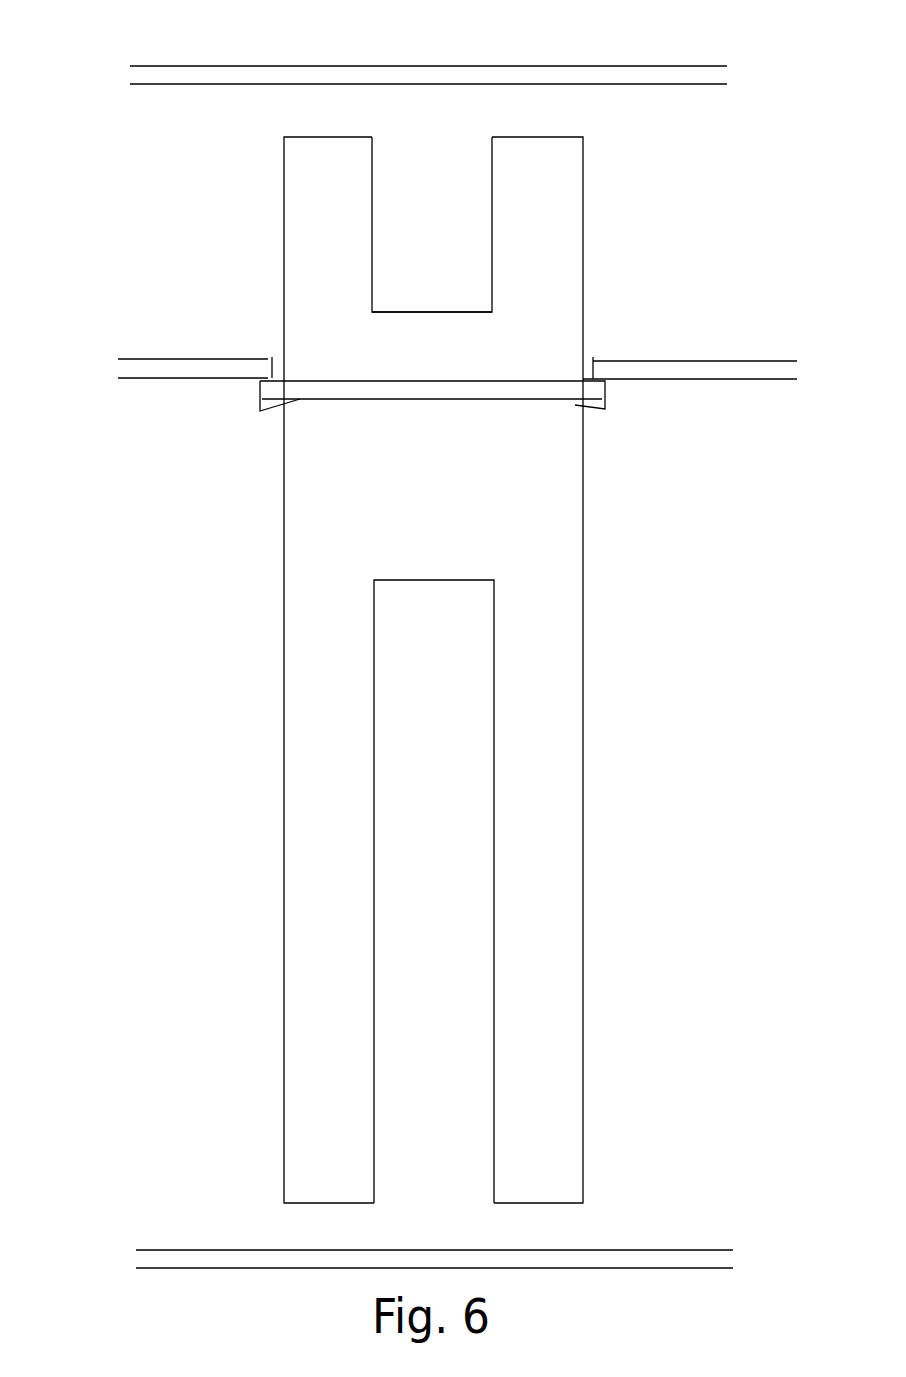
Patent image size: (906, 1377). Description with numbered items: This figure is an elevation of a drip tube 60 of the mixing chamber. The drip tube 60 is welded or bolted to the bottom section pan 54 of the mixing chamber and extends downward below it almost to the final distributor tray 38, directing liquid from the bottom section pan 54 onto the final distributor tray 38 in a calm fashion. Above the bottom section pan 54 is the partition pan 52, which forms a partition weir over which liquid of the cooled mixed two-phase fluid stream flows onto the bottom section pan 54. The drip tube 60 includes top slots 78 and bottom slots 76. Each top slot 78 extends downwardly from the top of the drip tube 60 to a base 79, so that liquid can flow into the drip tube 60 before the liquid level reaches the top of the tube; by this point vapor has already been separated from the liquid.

The final distributor tray 38 is at (207, 1250).
The partition pan 52 is at (337, 66).
The bottom section pan 54 is at (183, 359).
The drip tube 60 is at (280, 605).
The bottom slot 76 is at (375, 927).
The top slot 78 is at (372, 268).
The base 79 is at (433, 312).